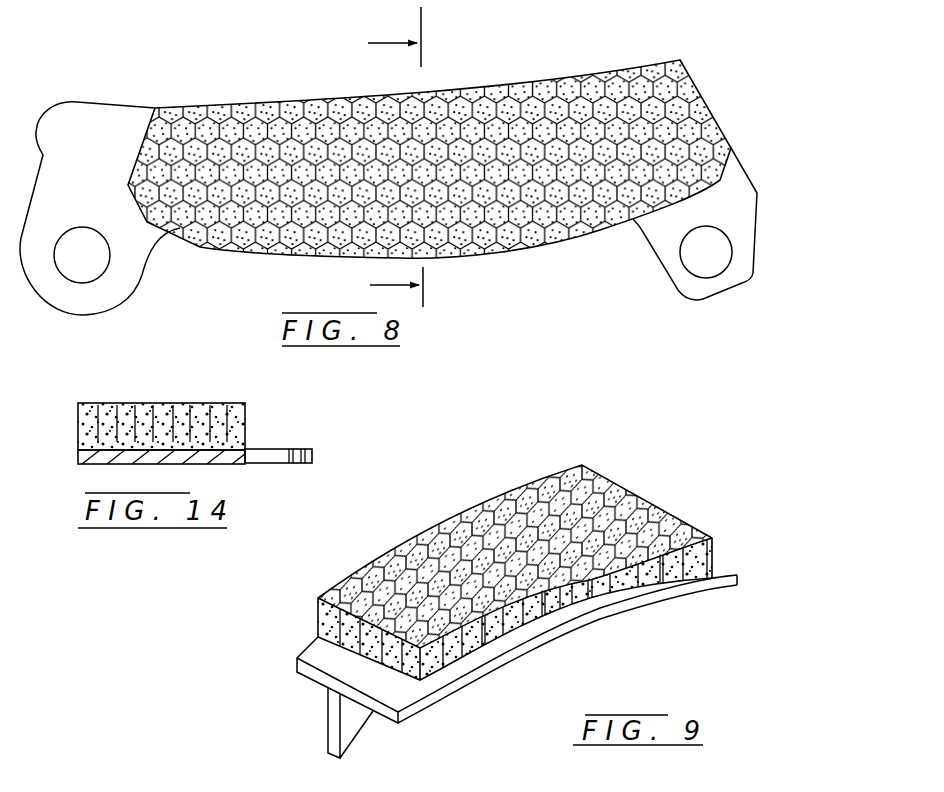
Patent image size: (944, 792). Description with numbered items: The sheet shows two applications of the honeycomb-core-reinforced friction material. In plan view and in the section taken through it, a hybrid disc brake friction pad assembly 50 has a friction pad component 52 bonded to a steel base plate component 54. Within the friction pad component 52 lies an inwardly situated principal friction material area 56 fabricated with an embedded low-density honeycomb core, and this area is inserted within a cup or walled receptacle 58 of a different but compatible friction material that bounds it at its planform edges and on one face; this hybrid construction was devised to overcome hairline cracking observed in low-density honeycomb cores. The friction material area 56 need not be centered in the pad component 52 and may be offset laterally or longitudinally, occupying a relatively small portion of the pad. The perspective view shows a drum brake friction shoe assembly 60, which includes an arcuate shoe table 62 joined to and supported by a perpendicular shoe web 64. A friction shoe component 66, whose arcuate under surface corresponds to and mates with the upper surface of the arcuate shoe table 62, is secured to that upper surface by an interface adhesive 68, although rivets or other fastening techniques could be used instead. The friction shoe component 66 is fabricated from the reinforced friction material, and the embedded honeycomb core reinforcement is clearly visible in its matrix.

In FIG. 8, the hybrid disc brake friction pad assembly 50 is at (413, 160).
In FIG. 14, the hybrid disc brake friction pad assembly 50 is at (173, 406).
In FIG. 8, the friction pad component 52 is at (429, 153).
In FIG. 14, the friction pad component 52 is at (148, 425).
In FIG. 8, the steel base plate component 54 is at (745, 173).
In FIG. 14, the steel base plate component 54 is at (285, 449).
In FIG. 8, the principal friction material area 56 is at (290, 187).
In FIG. 14, the principal friction material area 56 is at (173, 403).
In FIG. 8, the cup or walled receptacle 58 is at (525, 236).
In FIG. 14, the cup or walled receptacle 58 is at (88, 403).
In FIG. 9, the drum brake friction shoe assembly 60 is at (516, 617).
In FIG. 9, the arcuate shoe table 62 is at (486, 672).
In FIG. 9, the shoe web 64 is at (347, 723).
In FIG. 9, the friction shoe component 66 is at (443, 517).
In FIG. 9, the interface adhesive 68 is at (318, 647).